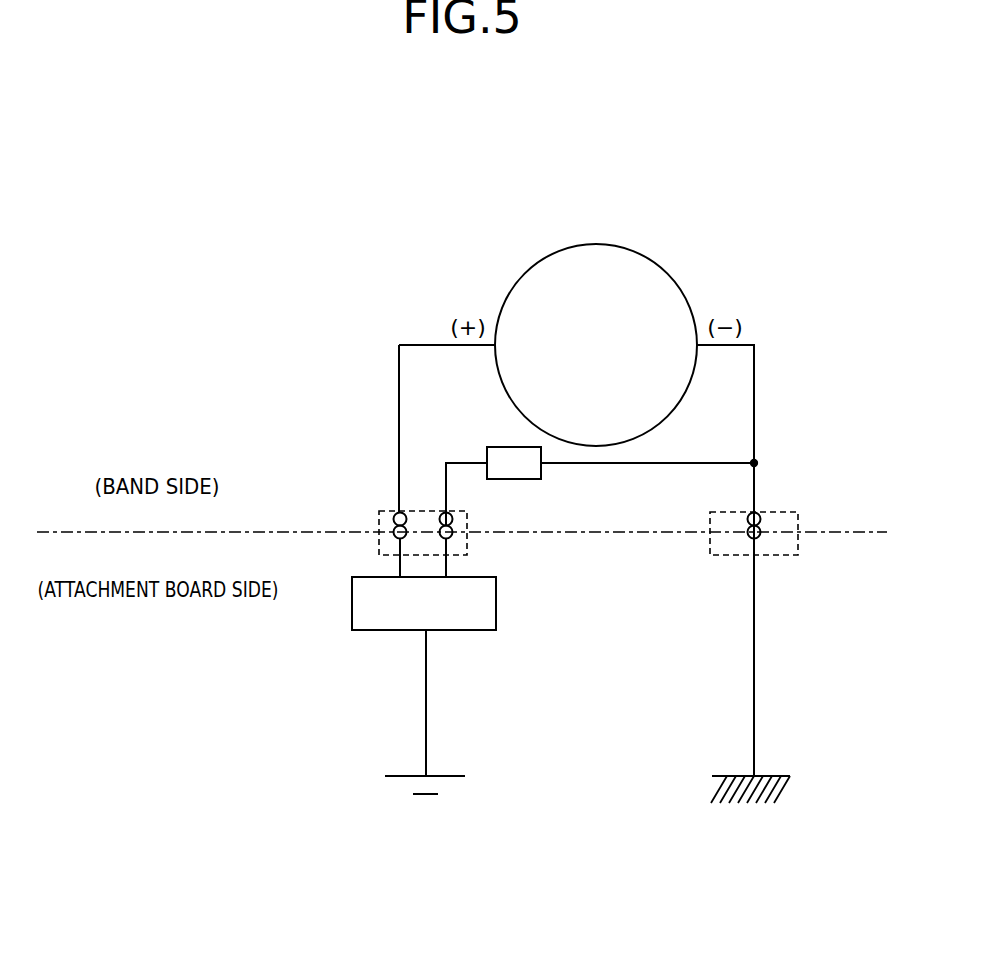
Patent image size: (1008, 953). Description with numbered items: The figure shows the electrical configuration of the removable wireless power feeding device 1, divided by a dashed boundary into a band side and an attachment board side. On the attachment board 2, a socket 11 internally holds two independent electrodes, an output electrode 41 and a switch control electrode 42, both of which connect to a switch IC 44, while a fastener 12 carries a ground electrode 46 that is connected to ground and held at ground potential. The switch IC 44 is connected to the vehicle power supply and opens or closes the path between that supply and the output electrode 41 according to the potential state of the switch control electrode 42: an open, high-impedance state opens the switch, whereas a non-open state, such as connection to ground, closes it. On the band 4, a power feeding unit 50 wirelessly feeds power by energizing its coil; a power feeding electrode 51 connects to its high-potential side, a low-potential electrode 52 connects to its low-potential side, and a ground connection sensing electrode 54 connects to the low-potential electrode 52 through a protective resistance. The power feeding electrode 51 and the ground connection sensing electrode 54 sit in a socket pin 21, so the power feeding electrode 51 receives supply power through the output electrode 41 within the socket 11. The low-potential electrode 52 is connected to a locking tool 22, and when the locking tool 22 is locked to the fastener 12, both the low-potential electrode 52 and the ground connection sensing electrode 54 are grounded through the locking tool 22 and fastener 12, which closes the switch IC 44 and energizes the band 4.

The removable wireless power feeding device 1 is at (562, 137).
The attachment board 2 is at (226, 717).
The band 4 is at (309, 262).
The socket 11 is at (382, 553).
The fastener 12 is at (798, 545).
The socket pin 21 is at (378, 518).
The locking tool 22 is at (782, 508).
The output electrode 41 is at (395, 535).
The switch control electrode 42 is at (452, 538).
The switch IC 44 is at (470, 631).
The ground electrode 46 is at (748, 536).
The power feeding unit 50 is at (633, 248).
The power feeding electrode 51 is at (395, 512).
The low-potential electrode 52 is at (747, 513).
The ground connection sensing electrode 54 is at (452, 518).